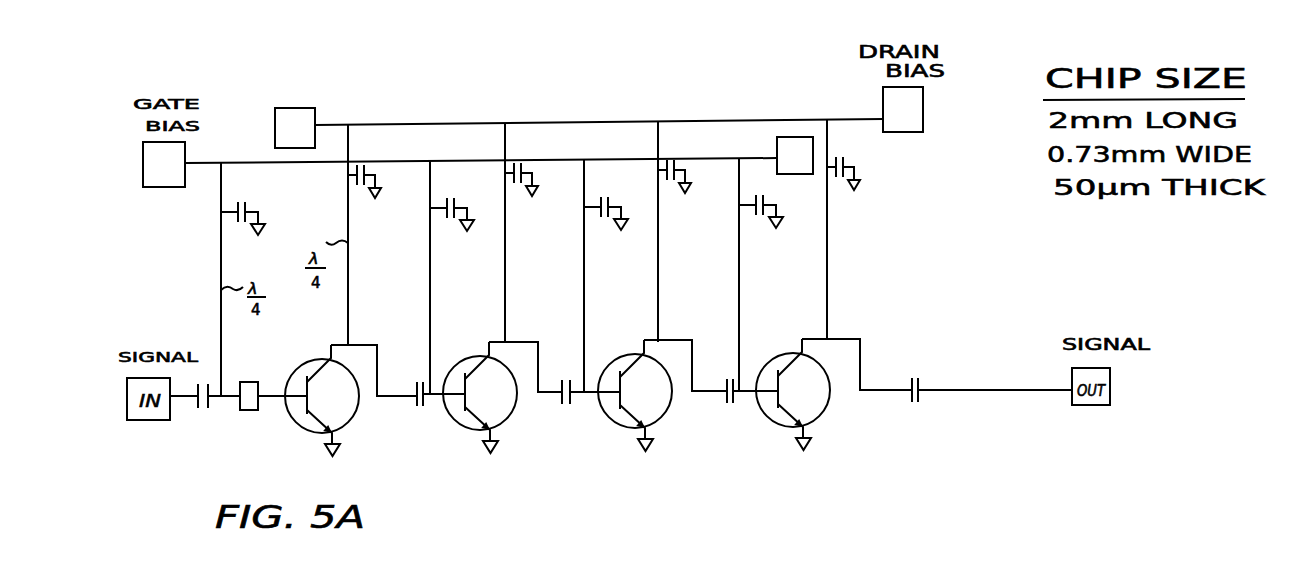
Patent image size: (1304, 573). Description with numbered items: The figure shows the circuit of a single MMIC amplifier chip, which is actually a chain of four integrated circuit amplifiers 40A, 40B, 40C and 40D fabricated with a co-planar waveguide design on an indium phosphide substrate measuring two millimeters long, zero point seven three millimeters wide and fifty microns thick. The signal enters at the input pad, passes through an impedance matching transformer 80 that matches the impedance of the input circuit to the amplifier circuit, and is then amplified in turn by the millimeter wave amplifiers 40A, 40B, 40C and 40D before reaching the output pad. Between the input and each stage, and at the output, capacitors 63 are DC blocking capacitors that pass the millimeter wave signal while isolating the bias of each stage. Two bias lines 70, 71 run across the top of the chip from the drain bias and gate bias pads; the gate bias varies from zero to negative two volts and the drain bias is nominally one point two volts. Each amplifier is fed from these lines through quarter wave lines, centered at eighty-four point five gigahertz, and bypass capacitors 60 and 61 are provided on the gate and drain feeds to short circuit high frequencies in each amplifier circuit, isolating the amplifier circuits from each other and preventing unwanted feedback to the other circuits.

The integrated circuit amplifier 40A is at (366, 434).
The integrated circuit amplifier 40B is at (520, 440).
The integrated circuit amplifier 40C is at (672, 434).
The integrated circuit amplifier 40D is at (830, 438).
The bypass capacitor 60 is at (260, 196).
The bypass capacitor 61 is at (375, 222).
The DC blocking capacitor 63 is at (207, 422).
The drain bias bus line 70 is at (555, 121).
The gate bias bus line 71 is at (703, 158).
The impedance matching transformer 80 is at (248, 426).